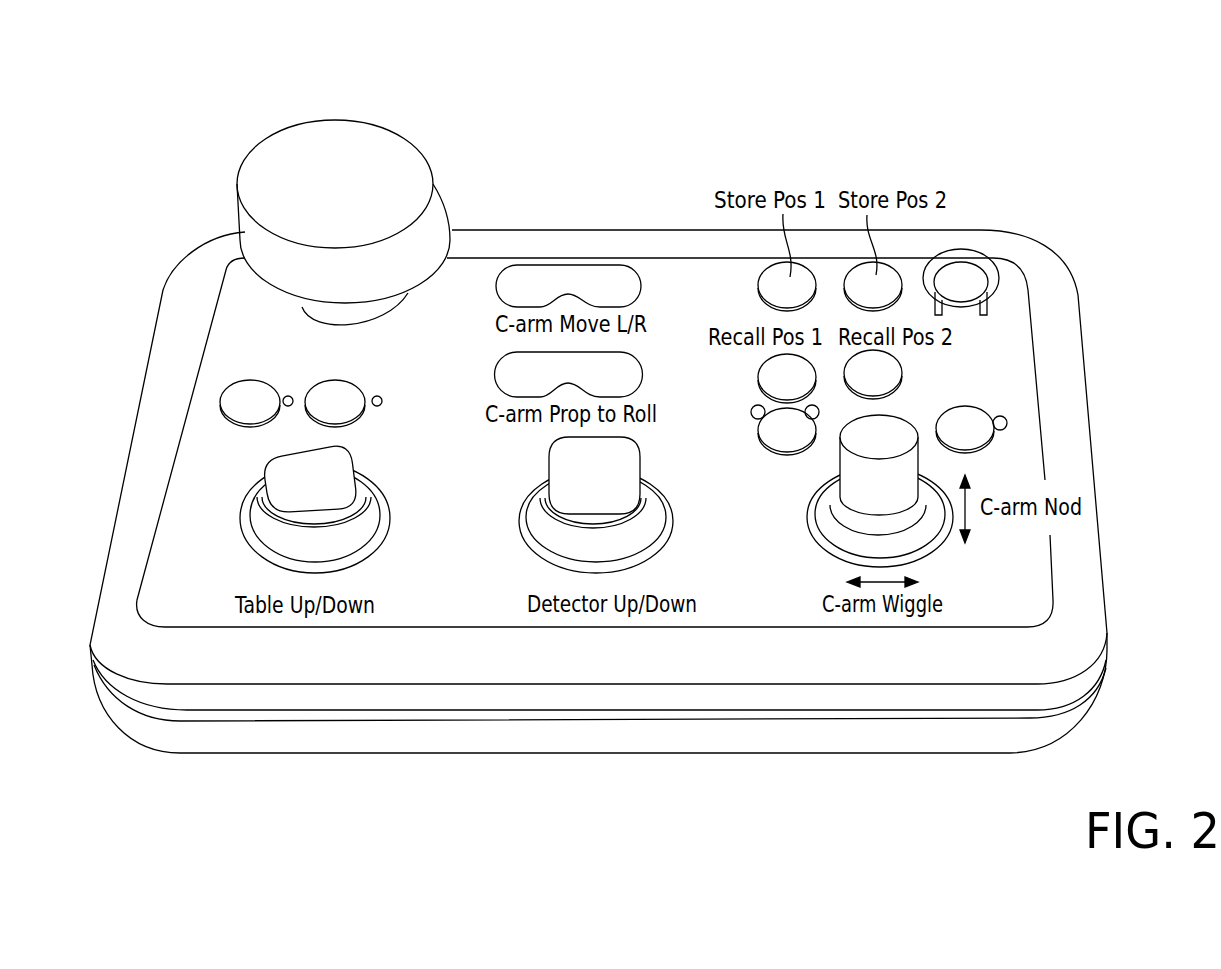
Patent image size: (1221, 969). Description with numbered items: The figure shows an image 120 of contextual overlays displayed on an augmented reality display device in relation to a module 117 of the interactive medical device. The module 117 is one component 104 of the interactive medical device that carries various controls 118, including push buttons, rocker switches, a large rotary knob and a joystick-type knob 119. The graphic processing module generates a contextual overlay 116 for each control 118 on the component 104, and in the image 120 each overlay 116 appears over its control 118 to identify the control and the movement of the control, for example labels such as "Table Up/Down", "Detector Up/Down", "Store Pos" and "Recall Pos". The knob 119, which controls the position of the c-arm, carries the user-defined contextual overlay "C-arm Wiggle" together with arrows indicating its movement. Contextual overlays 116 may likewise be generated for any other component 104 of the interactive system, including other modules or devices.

The component 104 is at (598, 486).
The contextual overlay 116 is at (687, 240).
The module 117 is at (963, 655).
The control 118 is at (345, 135).
The knob 119 is at (853, 483).
The image 120 is at (208, 697).